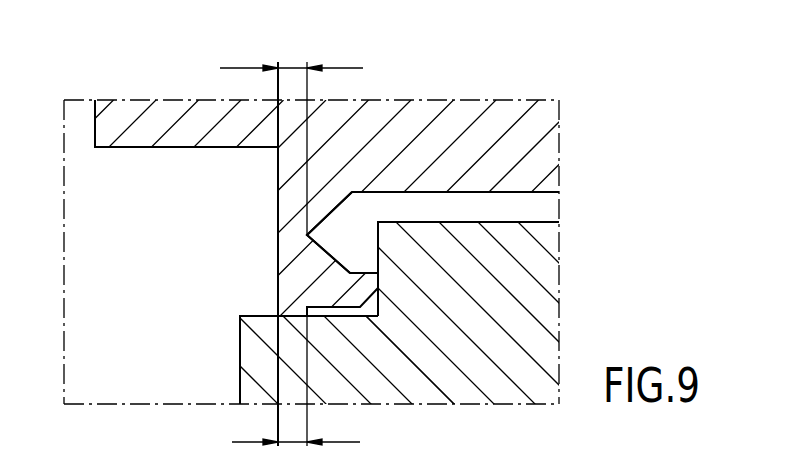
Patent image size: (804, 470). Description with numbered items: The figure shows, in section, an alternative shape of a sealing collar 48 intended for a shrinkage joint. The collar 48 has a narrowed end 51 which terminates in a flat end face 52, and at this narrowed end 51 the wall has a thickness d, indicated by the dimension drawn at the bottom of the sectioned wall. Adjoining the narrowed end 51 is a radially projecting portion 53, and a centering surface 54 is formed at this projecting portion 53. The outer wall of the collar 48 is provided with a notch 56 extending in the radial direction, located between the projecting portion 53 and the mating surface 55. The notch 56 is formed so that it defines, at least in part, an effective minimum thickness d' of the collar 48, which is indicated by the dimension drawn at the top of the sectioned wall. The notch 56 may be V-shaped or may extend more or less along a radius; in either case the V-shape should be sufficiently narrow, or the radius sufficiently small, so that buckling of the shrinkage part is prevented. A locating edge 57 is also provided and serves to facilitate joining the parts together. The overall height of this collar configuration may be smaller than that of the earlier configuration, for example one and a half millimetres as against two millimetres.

The collar 48 is at (268, 203).
The narrowed end 51 is at (278, 310).
The flat end face 52 is at (296, 319).
The radially projecting portion 53 is at (356, 293).
The centering surface 54 is at (380, 280).
The mating surface 55 is at (508, 192).
The notch 56 is at (327, 232).
The locating edge 57 is at (390, 323).
The wall thickness d is at (296, 376).
The effective minimum thickness d' is at (291, 135).